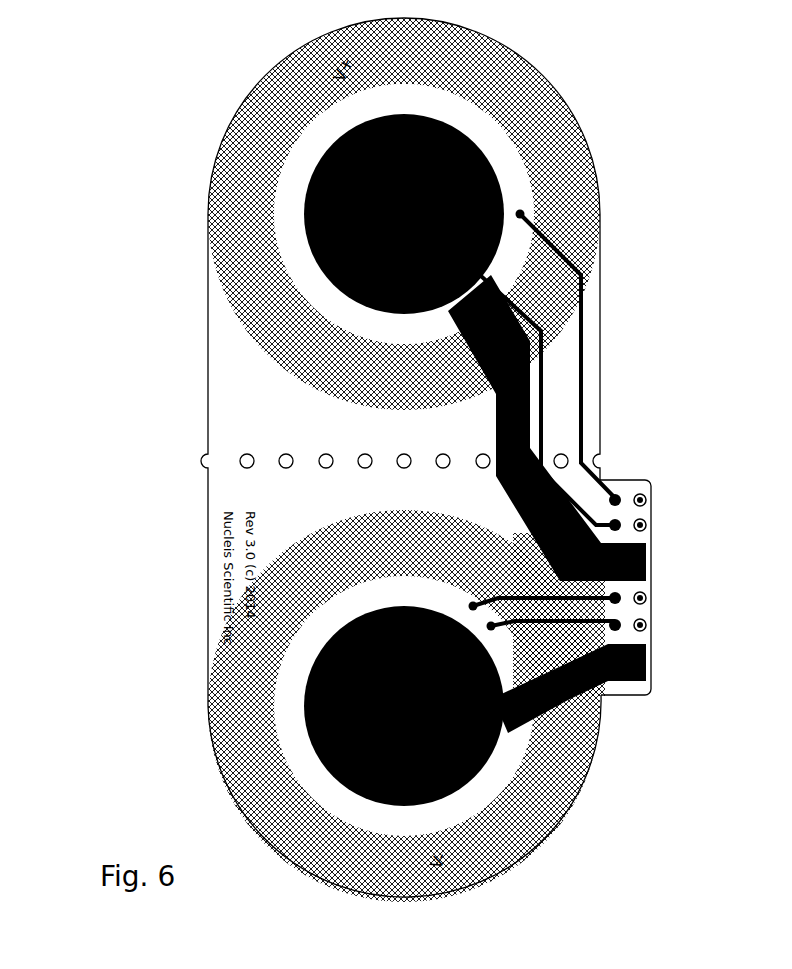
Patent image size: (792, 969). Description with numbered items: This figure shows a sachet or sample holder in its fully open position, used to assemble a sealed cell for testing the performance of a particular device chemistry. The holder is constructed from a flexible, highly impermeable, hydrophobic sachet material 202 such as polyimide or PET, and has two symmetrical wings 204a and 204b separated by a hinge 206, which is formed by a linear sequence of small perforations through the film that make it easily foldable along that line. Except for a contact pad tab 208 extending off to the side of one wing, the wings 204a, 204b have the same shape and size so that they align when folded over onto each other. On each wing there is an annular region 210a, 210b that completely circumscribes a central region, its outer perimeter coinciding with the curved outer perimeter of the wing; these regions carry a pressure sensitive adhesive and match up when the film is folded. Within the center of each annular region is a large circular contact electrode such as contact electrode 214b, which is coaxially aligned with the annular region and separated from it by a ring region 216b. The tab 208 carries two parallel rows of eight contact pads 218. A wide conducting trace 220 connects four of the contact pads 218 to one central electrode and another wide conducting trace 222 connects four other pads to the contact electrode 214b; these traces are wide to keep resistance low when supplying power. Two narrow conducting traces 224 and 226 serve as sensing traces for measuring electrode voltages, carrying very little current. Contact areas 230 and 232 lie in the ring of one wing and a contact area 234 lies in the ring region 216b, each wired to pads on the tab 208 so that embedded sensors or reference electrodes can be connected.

The sachet material 202 is at (257, 398).
The wing 204a is at (607, 803).
The wing 204b is at (607, 145).
The hinge 206 is at (178, 453).
The contact pad tab 208 is at (641, 475).
The annular region 210a is at (232, 760).
The annular region 210b is at (237, 124).
The contact electrode 214b is at (467, 137).
The ring region 216b is at (502, 150).
The contact pads 218 is at (634, 588).
The wide conducting trace 220 is at (557, 698).
The wide conducting trace 222 is at (522, 425).
The narrow conducting trace 224 is at (575, 632).
The narrow conducting trace 226 is at (533, 382).
The contact area 230 is at (465, 598).
The contact area 232 is at (483, 618).
The contact area 234 is at (514, 205).